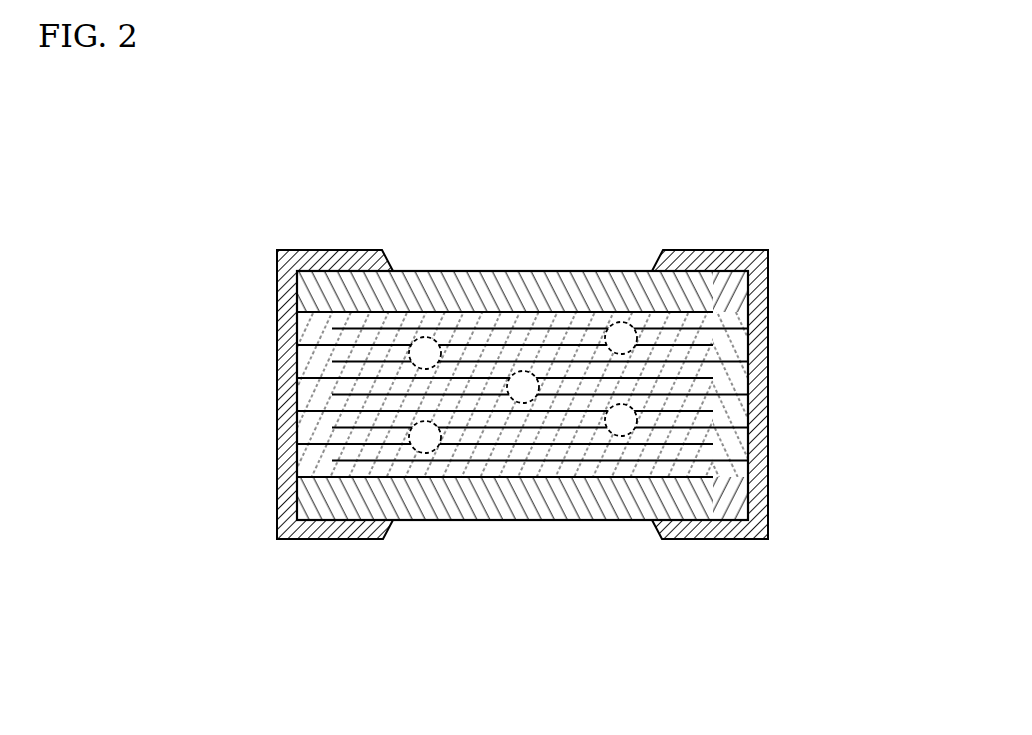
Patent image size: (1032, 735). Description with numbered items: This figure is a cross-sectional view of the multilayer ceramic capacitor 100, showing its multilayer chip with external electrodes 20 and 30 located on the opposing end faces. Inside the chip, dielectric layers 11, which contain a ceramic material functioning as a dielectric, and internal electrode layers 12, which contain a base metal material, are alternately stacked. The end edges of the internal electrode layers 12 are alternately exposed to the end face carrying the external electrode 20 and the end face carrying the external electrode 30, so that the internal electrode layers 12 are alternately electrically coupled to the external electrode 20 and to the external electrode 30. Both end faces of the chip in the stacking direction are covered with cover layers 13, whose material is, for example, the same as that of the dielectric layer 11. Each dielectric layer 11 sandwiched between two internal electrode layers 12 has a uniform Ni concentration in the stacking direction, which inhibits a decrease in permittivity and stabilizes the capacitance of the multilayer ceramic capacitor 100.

The multilayer ceramic capacitor 100 is at (693, 207).
The dielectric layer 11 is at (615, 452).
The internal electrode layer 12 is at (518, 428).
The cover layer 13 is at (441, 280).
The external electrode 20 is at (303, 266).
The external electrode 30 is at (746, 265).